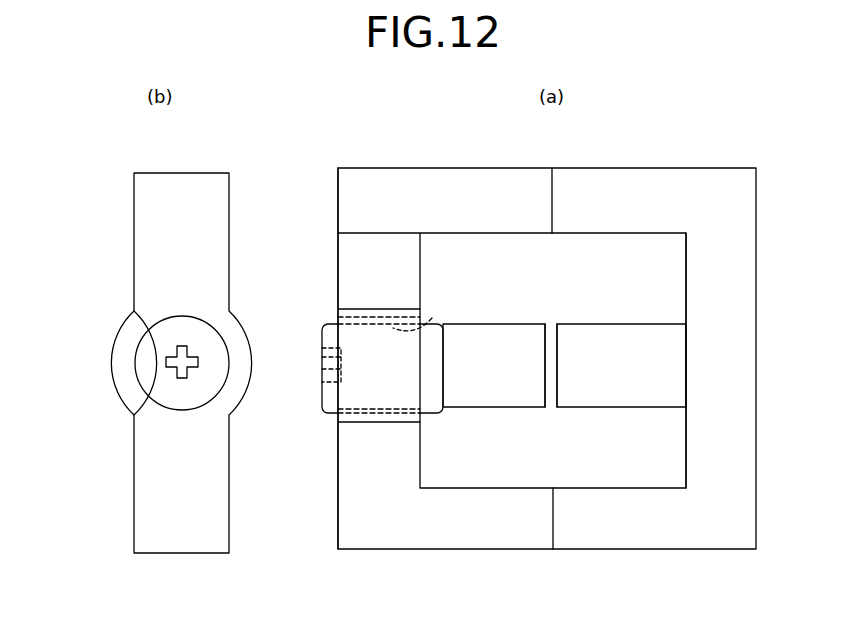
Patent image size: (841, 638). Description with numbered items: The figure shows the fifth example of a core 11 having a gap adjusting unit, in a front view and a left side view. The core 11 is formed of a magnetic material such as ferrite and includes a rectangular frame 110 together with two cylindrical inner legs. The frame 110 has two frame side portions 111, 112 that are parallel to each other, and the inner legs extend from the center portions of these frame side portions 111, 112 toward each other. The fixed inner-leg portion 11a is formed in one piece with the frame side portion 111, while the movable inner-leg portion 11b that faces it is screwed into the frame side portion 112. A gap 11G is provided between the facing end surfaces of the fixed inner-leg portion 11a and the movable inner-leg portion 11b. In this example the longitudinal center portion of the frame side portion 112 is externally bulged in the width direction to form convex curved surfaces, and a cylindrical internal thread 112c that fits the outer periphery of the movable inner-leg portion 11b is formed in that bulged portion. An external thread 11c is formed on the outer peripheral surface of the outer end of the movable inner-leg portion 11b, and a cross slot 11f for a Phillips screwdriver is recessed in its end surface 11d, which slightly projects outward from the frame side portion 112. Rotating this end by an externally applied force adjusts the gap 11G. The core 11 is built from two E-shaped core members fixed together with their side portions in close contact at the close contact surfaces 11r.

The core 11 is at (663, 160).
The fixed inner-leg portion 11a is at (612, 327).
The movable inner-leg portion 11b is at (503, 330).
The gap 11G is at (552, 397).
The external thread 11c is at (430, 415).
The end surface 11d is at (322, 410).
The cross slot 11f is at (322, 358).
The close contact surfaces 11r is at (552, 196).
The rectangular frame 110 is at (442, 180).
The frame side portion 111 is at (745, 352).
The frame side portion 112 is at (345, 245).
The cylindrical internal thread 112c is at (432, 313).